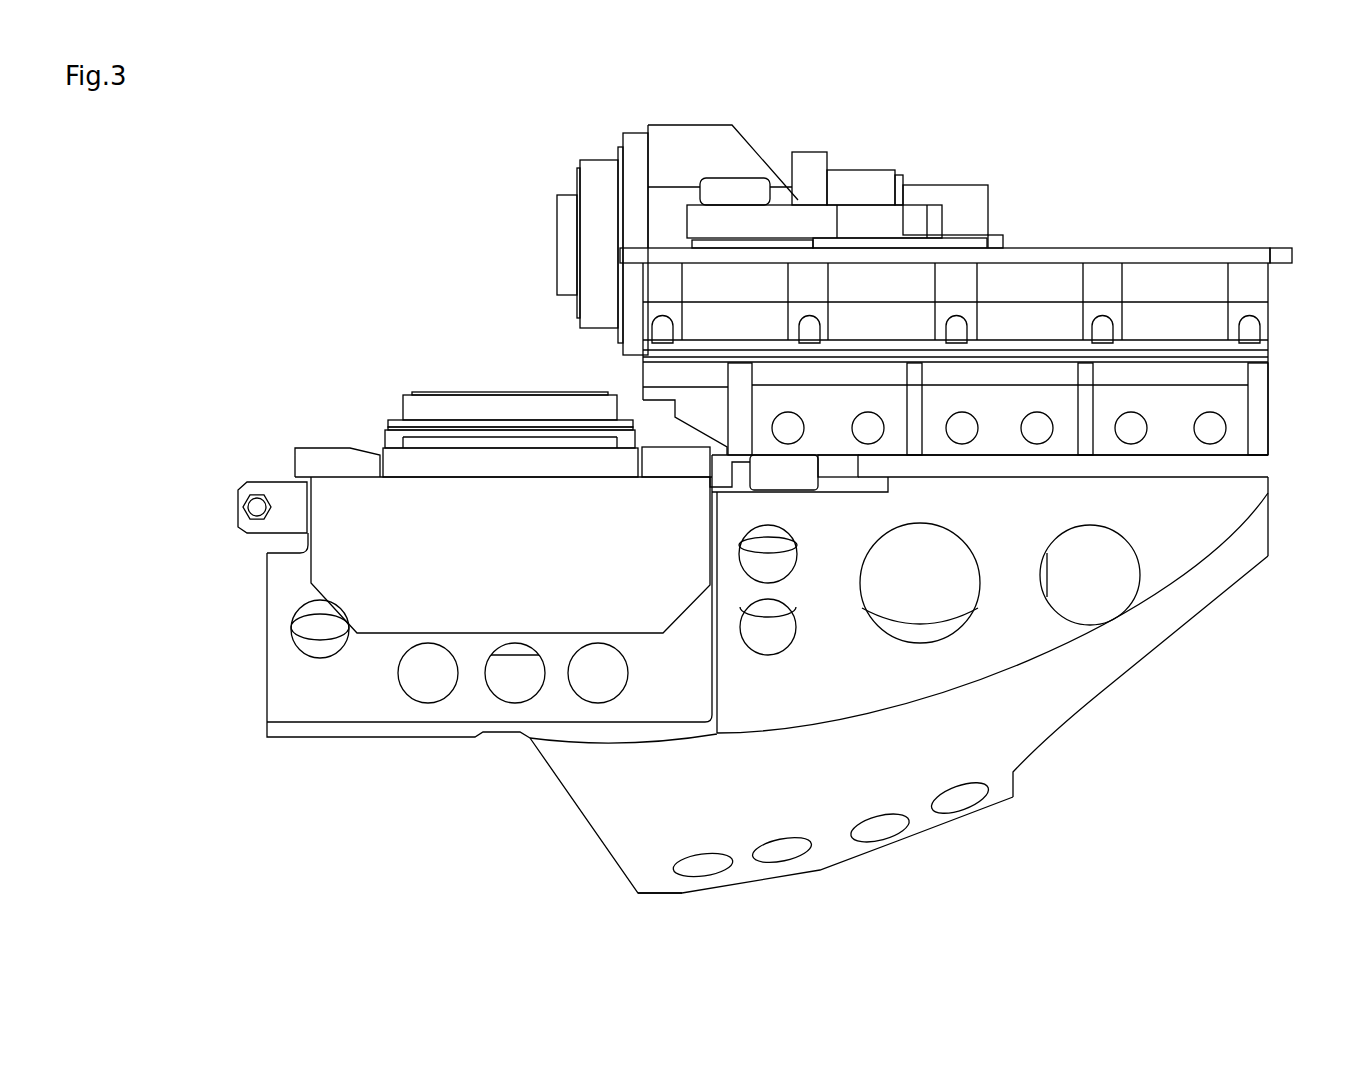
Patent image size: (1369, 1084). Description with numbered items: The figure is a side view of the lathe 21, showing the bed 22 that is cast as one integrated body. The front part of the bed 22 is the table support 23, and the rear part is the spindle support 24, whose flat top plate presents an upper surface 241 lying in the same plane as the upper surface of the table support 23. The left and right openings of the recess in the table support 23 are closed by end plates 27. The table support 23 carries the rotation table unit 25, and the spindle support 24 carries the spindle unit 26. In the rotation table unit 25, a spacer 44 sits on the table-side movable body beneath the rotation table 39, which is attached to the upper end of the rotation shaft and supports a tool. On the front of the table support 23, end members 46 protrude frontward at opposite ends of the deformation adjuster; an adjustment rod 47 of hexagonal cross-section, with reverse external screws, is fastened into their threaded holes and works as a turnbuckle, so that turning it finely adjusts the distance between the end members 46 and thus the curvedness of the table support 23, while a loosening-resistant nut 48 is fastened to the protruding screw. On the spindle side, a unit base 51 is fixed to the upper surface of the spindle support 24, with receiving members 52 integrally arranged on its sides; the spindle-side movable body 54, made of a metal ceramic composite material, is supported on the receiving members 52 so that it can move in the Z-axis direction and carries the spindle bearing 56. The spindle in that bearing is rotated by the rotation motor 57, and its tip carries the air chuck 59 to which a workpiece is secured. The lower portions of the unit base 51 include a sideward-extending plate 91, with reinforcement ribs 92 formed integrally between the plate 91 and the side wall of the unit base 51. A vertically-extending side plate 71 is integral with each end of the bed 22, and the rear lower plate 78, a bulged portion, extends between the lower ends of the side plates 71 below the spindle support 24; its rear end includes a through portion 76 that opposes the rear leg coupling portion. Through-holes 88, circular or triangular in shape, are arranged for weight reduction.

The lathe 21 is at (1191, 194).
The bed 22 is at (929, 710).
The table support 23 is at (455, 593).
The spindle support 24 is at (1255, 568).
The rotation table unit 25 is at (446, 389).
The spindle unit 26 is at (966, 184).
The end plate 27 is at (668, 618).
The rotation table 39 is at (530, 392).
The spacer 44 is at (580, 478).
The end member 46 is at (245, 486).
The adjustment rod 47 is at (250, 512).
The nut 48 is at (248, 505).
The unit base 51 is at (1270, 373).
The receiving member 52 is at (1268, 285).
The spindle-side movable body 54 is at (680, 126).
The spindle bearing 56 is at (815, 152).
The rotation motor 57 is at (987, 206).
The air chuck 59 is at (557, 220).
The side plate 71 is at (1042, 648).
The through portion 76 is at (1105, 693).
The rear lower plate 78 is at (655, 882).
The through-hole 88 is at (800, 423).
The plate 91 is at (1208, 468).
The reinforcement rib 92 is at (1258, 407).
The upper surface 241 is at (1242, 475).